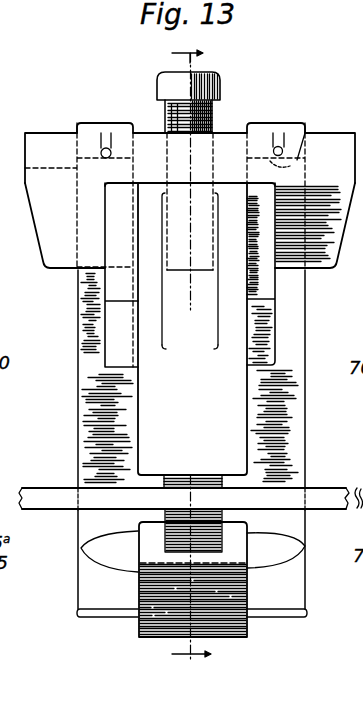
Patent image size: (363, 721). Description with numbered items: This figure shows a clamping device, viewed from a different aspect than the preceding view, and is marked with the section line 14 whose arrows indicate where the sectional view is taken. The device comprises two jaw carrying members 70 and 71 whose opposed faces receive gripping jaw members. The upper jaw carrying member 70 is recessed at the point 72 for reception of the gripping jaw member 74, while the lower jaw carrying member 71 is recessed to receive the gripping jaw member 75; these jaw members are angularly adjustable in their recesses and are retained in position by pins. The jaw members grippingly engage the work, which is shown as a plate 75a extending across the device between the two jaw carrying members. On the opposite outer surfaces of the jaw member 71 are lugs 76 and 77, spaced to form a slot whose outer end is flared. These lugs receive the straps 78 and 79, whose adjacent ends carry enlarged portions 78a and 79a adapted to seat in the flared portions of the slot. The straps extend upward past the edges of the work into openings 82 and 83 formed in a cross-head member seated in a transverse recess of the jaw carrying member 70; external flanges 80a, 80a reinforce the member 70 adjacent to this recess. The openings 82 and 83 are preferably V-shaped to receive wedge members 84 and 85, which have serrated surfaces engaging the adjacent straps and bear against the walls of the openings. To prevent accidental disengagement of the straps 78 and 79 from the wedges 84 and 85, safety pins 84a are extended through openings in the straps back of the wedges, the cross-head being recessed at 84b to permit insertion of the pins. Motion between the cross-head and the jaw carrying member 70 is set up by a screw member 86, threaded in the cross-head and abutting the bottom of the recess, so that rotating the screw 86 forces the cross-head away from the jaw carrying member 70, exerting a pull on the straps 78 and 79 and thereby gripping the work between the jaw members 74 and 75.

The section line 14 is at (191, 359).
The jaw carrying member 70 is at (190, 329).
The jaw carrying member 71 is at (232, 640).
The recess 72 is at (362, 436).
The gripping jaw member 74 is at (187, 478).
The gripping jaw member 75 is at (182, 533).
The plate 75a is at (281, 497).
The lug 76 is at (117, 602).
The lug 77 is at (288, 598).
The strap 78 is at (83, 429).
The enlarged portion 78a is at (82, 619).
The strap 79 is at (295, 412).
The enlarged portion 79a is at (303, 617).
The external flange 80a is at (115, 283).
The opening 82 is at (86, 199).
The opening 83 is at (297, 186).
The wedge member 84 is at (25, 168).
The safety pin 84a is at (101, 153).
The recess 84b is at (104, 140).
The wedge member 85 is at (297, 160).
The screw member 86 is at (214, 84).